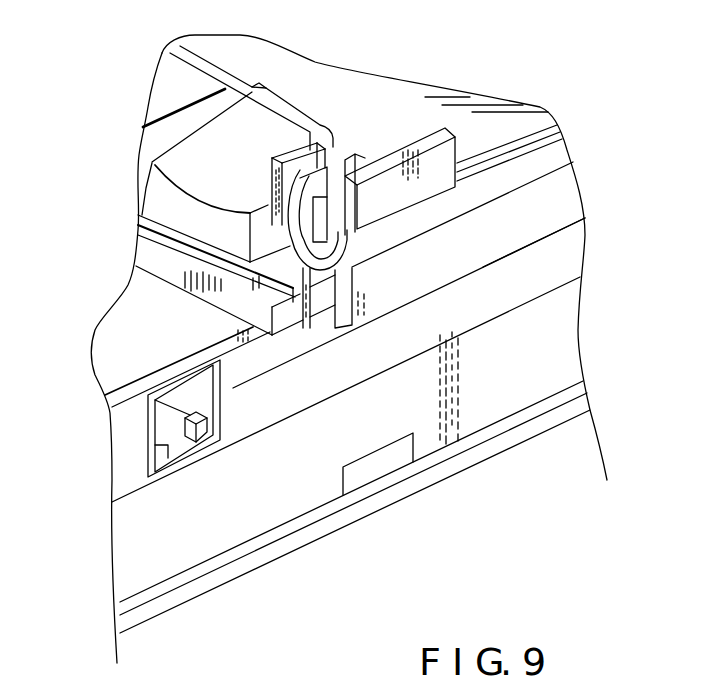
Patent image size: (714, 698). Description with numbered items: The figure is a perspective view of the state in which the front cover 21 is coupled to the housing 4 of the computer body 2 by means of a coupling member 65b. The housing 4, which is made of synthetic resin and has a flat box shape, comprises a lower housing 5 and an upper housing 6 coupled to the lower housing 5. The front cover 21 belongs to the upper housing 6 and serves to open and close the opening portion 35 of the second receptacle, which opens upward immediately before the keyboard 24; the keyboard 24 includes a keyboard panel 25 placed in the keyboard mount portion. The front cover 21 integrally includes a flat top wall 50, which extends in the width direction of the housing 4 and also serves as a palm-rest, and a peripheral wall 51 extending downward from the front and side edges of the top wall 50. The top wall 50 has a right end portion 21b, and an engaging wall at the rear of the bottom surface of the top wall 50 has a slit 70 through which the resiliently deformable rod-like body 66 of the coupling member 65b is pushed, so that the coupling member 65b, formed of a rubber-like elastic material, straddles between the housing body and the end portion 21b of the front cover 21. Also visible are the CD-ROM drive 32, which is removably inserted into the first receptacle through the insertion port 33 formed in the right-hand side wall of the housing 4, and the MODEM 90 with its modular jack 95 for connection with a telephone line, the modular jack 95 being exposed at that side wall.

The computer body 2 is at (498, 453).
The housing 4 is at (638, 222).
The lower housing 5 is at (560, 265).
The upper housing 6 is at (563, 207).
The front cover 21 is at (240, 60).
The right end portion 21b is at (498, 132).
The keyboard 24 is at (150, 206).
The keyboard panel 25 is at (182, 158).
The CD-ROM drive 32 is at (380, 432).
The insertion port 33 is at (510, 312).
The opening portion 35 is at (140, 368).
The top wall 50 is at (430, 80).
The peripheral wall 51 is at (437, 175).
The coupling member 65b is at (355, 272).
The body 66 is at (270, 224).
The slit 70 is at (308, 130).
The MODEM 90 is at (120, 346).
The modular jack 95 is at (175, 425).